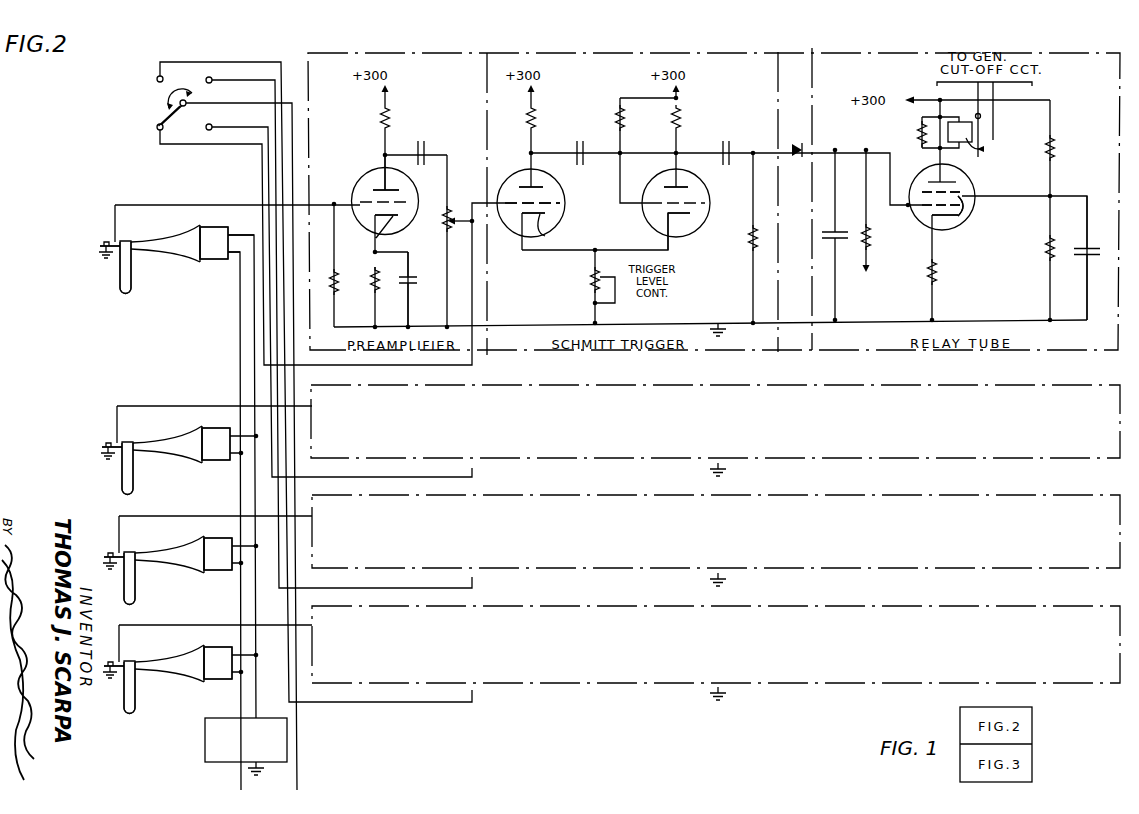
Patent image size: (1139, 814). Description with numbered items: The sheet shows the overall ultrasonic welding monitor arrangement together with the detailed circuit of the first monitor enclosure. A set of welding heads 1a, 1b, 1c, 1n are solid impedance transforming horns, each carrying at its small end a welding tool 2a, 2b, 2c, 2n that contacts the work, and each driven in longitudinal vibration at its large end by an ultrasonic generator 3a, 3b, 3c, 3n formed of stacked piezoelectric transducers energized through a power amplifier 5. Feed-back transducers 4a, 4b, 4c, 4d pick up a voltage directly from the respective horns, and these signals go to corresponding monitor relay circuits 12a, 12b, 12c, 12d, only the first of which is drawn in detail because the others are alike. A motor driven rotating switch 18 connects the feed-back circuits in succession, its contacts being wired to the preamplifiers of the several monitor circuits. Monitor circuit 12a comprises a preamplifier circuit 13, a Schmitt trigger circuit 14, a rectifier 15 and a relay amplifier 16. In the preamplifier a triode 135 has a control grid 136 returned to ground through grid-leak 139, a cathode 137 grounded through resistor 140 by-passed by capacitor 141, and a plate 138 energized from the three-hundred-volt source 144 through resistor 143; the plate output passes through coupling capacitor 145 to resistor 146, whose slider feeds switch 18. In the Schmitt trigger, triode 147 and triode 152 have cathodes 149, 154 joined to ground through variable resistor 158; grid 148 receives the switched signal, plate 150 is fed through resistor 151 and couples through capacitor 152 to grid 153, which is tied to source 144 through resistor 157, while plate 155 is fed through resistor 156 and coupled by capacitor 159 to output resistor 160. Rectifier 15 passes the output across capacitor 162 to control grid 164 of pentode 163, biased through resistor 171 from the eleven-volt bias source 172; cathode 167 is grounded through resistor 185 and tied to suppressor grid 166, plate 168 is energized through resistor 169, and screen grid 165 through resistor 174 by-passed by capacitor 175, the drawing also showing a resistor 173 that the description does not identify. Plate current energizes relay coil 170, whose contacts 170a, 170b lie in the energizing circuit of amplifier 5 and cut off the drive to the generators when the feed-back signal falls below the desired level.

In FIG. 1, the welding head horn 1a is at (160, 252).
In FIG. 1, the welding head horn 1b is at (162, 449).
In FIG. 1, the welding head horn 1c is at (164, 559).
In FIG. 1, the welding head horn 1n is at (164, 669).
In FIG. 1, the welding tool 2a is at (106, 269).
In FIG. 1, the welding tool 2b is at (107, 469).
In FIG. 1, the welding tool 2c is at (142, 583).
In FIG. 1, the welding tool 2n is at (134, 710).
In FIG. 1, the ultrasonic generator 3a is at (214, 258).
In FIG. 1, the ultrasonic generator 3b is at (213, 454).
In FIG. 1, the ultrasonic generator 3c is at (213, 565).
In FIG. 1, the ultrasonic generator 3n is at (213, 674).
In FIG. 1, the feed-back transducer 4a is at (108, 244).
In FIG. 1, the feed-back transducer 4b is at (110, 445).
In FIG. 1, the feed-back transducer 4c is at (110, 554).
In FIG. 1, the feed-back transducer 4d is at (115, 673).
In FIG. 1, the power amplifier 5 is at (206, 760).
In FIG. 1, the monitor relay circuit 12a is at (1063, 47).
In FIG. 1, the monitor relay circuit 12b is at (1110, 372).
In FIG. 1, the monitor relay circuit 12c is at (1110, 485).
In FIG. 1, the monitor relay circuit 12d is at (1110, 595).
In FIG. 2, the preamplifier circuit 13 is at (479, 345).
In FIG. 2, the Schmitt trigger circuit 14 is at (743, 343).
In FIG. 2, the rectifier 15 is at (809, 345).
In FIG. 2, the relay amplifier 16 is at (993, 348).
In FIG. 1, the motor driven rotating switch 18 is at (192, 114).
In FIG. 2, the triode 135 is at (370, 174).
In FIG. 2, the control grid 136 is at (371, 201).
In FIG. 2, the cathode 137 is at (374, 234).
In FIG. 2, the plate 138 is at (383, 160).
In FIG. 2, the grid-leak resistor 139 is at (337, 291).
In FIG. 2, the cathode resistor 140 is at (378, 290).
In FIG. 2, the cathode by-pass capacitor 141 is at (422, 285).
In FIG. 2, the plate resistor 143 is at (380, 117).
In FIG. 2, the 300 volt source 144 is at (388, 99).
In FIG. 2, the coupling capacitor 145 is at (426, 138).
In FIG. 2, the output resistor with slider 146 is at (442, 225).
In FIG. 2, the triode 147 is at (562, 186).
In FIG. 2, the grid 148 is at (548, 204).
In FIG. 2, the cathode 149 is at (546, 219).
In FIG. 2, the plate 150 is at (523, 176).
In FIG. 2, the plate resistor 151 is at (526, 120).
In FIG. 2, the triode 152 is at (590, 126).
In FIG. 2, the grid 153 is at (698, 192).
In FIG. 2, the cathode 154 is at (662, 220).
In FIG. 2, the plate 155 is at (668, 174).
In FIG. 2, the plate resistor 156 is at (683, 119).
In FIG. 2, the grid resistor 157 is at (625, 118).
In FIG. 2, the variable cathode resistor 158 is at (588, 276).
In FIG. 2, the coupling capacitor 159 is at (729, 138).
In FIG. 2, the output resistor 160 is at (748, 242).
In FIG. 2, the capacitor 162 is at (823, 237).
In FIG. 2, the pentode 163 is at (924, 222).
In FIG. 2, the control grid 164 is at (969, 206).
In FIG. 2, the screen grid 165 is at (920, 203).
In FIG. 2, the suppressor grid 166 is at (966, 188).
In FIG. 2, the cathode 167 is at (961, 219).
In FIG. 2, the plate 168 is at (934, 174).
In FIG. 2, the plate resistor 169 is at (917, 134).
In FIG. 2, the electromagnetic relay coil 170 is at (967, 142).
In FIG. 2, the relay contact 170a is at (995, 126).
In FIG. 2, the relay contact 170b is at (995, 144).
In FIG. 2, the bias resistor 171 is at (862, 250).
In FIG. 2, the 11 volt bias source 172 is at (868, 268).
In FIG. 2, the resistor 173 is at (1056, 145).
In FIG. 2, the screen resistor 174 is at (1043, 249).
In FIG. 2, the screen by-pass capacitor 175 is at (1083, 262).
In FIG. 2, the cathode resistor 185 is at (938, 267).